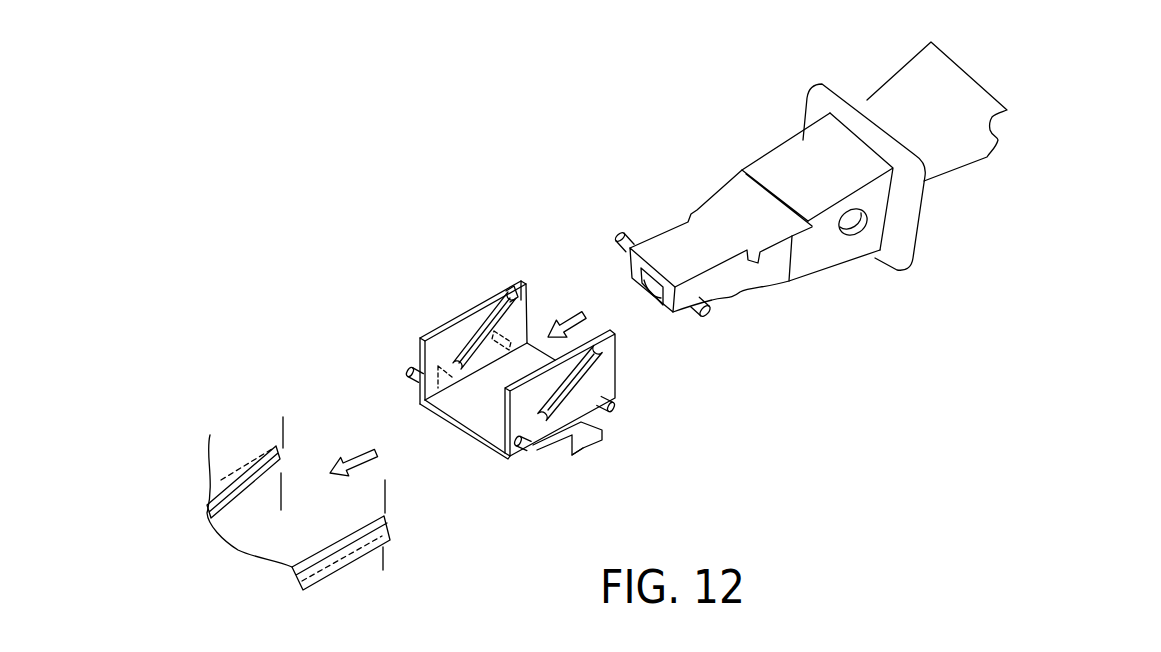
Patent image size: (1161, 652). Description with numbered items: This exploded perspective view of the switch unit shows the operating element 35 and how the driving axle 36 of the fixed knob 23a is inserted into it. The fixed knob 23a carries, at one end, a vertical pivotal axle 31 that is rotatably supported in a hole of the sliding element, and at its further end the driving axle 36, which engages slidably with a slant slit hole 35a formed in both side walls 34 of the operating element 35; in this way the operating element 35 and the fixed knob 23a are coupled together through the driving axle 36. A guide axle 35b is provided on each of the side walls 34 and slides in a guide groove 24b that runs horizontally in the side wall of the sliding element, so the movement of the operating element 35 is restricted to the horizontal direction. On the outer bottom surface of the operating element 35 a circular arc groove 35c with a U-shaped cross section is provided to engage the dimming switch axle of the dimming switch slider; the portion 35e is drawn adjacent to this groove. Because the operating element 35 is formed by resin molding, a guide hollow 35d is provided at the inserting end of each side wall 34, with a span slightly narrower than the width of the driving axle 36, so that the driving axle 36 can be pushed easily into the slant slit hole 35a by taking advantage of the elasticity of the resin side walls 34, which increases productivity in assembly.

The fixed knob 23a is at (943, 165).
The pivotal axle 31 is at (852, 236).
The driving axle 36 is at (618, 233).
The side walls 34 is at (437, 324).
The operating element 35 is at (477, 422).
The slant slit hole 35a is at (586, 382).
The guide axle 35b is at (408, 376).
The circular arc groove 35c is at (589, 452).
The guide hollow 35d is at (521, 280).
The step portion 35e is at (560, 450).
The guide groove 24b is at (286, 456).